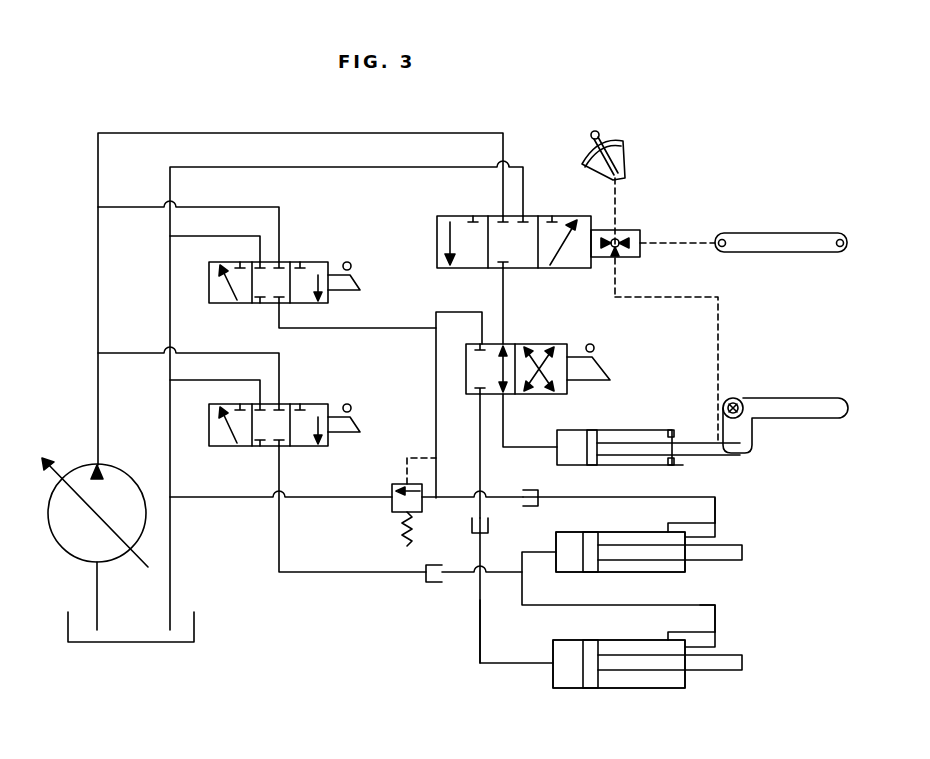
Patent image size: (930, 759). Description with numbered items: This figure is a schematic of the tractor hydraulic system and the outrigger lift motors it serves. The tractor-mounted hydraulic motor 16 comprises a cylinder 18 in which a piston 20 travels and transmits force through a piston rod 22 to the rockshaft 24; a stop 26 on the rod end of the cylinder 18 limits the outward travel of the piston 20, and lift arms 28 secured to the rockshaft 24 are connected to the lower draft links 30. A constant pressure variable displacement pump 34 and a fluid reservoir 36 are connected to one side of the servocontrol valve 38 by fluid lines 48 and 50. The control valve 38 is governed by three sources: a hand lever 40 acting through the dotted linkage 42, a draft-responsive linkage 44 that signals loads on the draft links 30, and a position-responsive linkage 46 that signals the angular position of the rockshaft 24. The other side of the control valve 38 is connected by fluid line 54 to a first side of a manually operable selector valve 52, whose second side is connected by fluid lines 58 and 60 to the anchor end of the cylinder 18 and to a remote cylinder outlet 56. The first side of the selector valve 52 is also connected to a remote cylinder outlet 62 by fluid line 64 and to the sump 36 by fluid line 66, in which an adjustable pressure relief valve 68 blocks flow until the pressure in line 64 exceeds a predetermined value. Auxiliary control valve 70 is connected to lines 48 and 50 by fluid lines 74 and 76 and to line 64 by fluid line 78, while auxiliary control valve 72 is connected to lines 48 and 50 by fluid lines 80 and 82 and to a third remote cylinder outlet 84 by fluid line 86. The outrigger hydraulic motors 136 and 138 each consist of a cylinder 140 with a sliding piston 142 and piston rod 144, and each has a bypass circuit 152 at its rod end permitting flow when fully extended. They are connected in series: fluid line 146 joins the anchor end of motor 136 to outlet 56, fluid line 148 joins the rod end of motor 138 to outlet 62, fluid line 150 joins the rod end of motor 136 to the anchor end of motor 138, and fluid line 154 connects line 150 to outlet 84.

The hydraulic motor 16 is at (698, 429).
The cylinder 18 is at (571, 430).
The piston 20 is at (592, 430).
The piston rod 22 is at (708, 449).
The rockshaft 24 is at (737, 398).
The stop 26 is at (677, 432).
The lift arms 28 is at (815, 414).
The lower draft links 30 is at (765, 235).
The constant pressure variable displacement pump 34 is at (123, 467).
The fluid reservoir 36 is at (197, 627).
The servocontrol valve 38 is at (420, 212).
The hand lever 40 is at (598, 130).
The linkage 42 is at (616, 197).
The linkage 44 is at (670, 243).
The linkage 46 is at (685, 297).
The fluid line 48 is at (250, 133).
The fluid line 50 is at (327, 167).
The selector valve 52 is at (578, 342).
The fluid line 54 is at (505, 287).
The remote cylinder outlet 56 is at (488, 527).
The fluid line 58 is at (503, 425).
The fluid line 60 is at (483, 471).
The remote cylinder outlet 62 is at (528, 490).
The fluid line 64 is at (436, 387).
The fluid line 66 is at (324, 497).
The pressure relief valve 68 is at (392, 500).
The auxiliary control valve 70 is at (318, 262).
The auxiliary control valve 72 is at (321, 404).
The fluid line 74 is at (218, 207).
The fluid line 76 is at (221, 236).
The fluid line 78 is at (392, 328).
The fluid line 80 is at (216, 353).
The fluid line 82 is at (213, 380).
The remote cylinder outlet 84 is at (433, 582).
The fluid line 86 is at (331, 572).
The hydraulic motor 136 is at (563, 696).
The hydraulic motor 138 is at (576, 578).
The cylinder 140 is at (568, 532).
The piston 142 is at (596, 537).
The piston rod 144 is at (715, 560).
The fluid line 146 is at (478, 649).
The fluid line 148 is at (630, 497).
The fluid line 150 is at (725, 618).
The bypass circuit 152 is at (690, 523).
The fluid line 154 is at (505, 574).